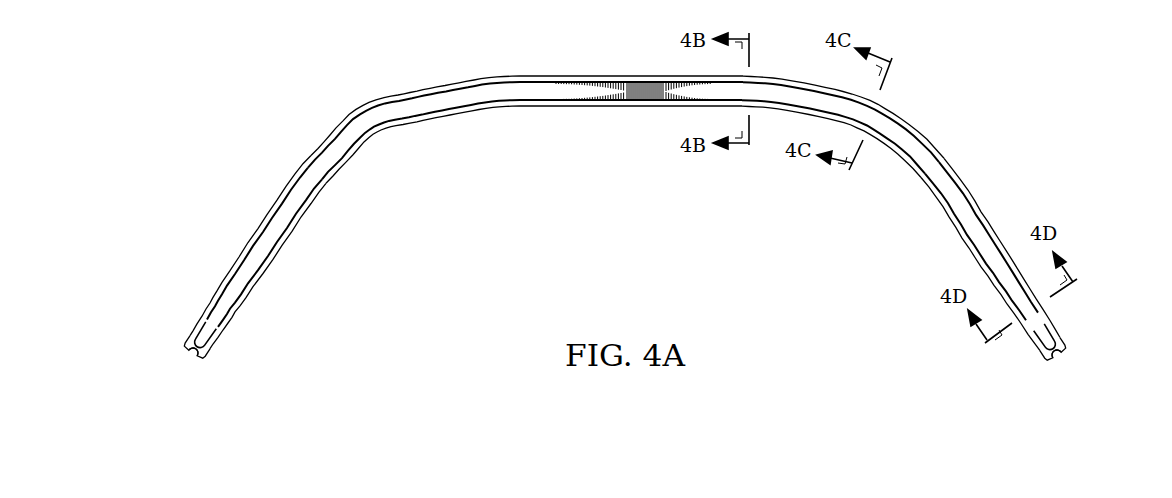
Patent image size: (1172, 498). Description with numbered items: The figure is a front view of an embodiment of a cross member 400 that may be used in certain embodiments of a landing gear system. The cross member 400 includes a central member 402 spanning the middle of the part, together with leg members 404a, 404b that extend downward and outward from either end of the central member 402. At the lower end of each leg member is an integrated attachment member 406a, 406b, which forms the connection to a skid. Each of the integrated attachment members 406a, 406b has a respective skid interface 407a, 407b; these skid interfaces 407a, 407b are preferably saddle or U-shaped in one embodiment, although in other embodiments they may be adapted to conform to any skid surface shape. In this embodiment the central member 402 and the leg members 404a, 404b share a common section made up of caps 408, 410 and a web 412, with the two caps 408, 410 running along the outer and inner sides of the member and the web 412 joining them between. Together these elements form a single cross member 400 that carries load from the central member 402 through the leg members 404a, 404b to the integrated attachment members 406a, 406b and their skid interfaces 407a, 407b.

The cross member 400 is at (628, 215).
The central member 402 is at (605, 107).
The leg member 404a is at (299, 222).
The leg member 404b is at (954, 220).
The integrated attachment member 406a is at (169, 349).
The integrated attachment member 406b is at (1084, 347).
The skid interface 407a is at (195, 351).
The skid interface 407b is at (1060, 348).
The cap 408 is at (418, 87).
The cap 410 is at (431, 117).
The web 412 is at (511, 92).